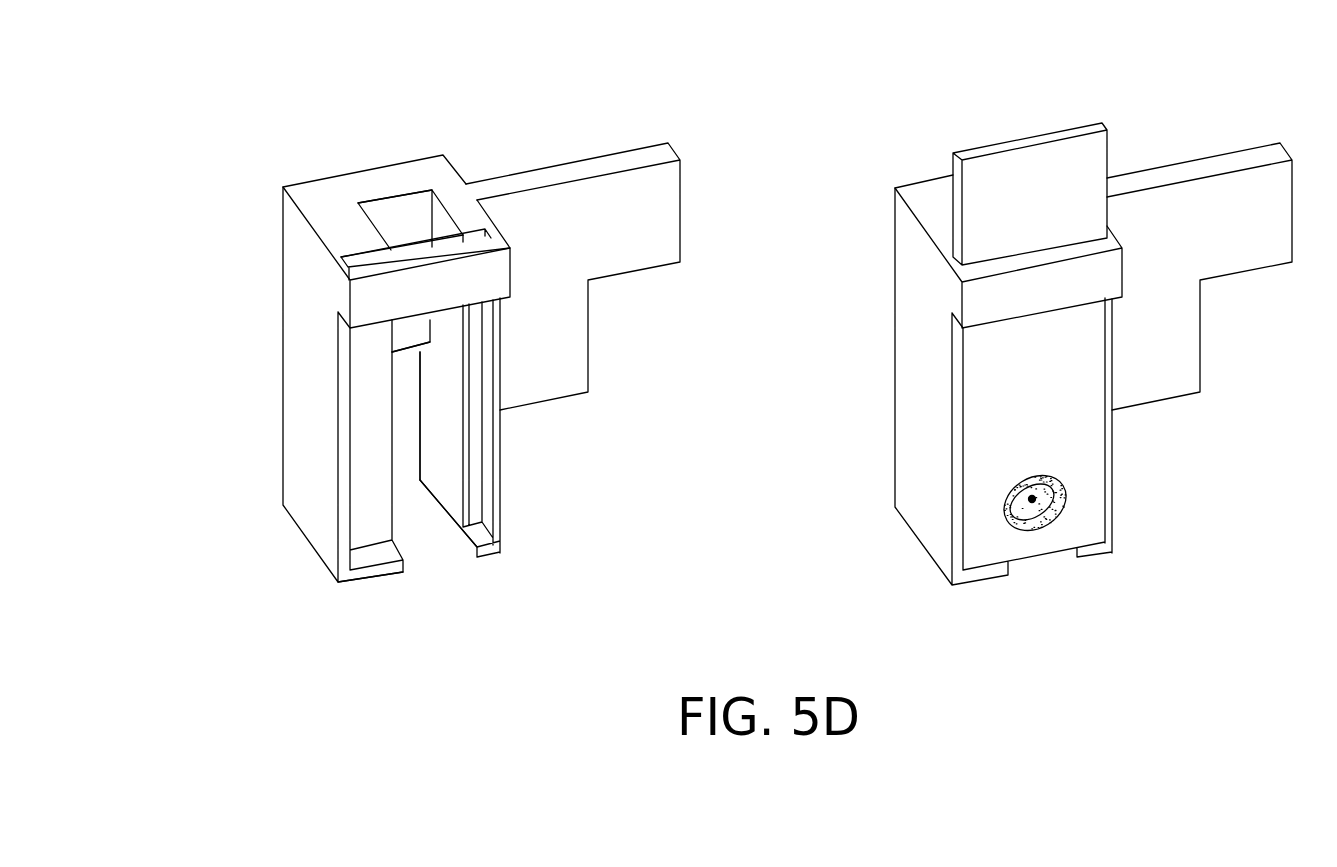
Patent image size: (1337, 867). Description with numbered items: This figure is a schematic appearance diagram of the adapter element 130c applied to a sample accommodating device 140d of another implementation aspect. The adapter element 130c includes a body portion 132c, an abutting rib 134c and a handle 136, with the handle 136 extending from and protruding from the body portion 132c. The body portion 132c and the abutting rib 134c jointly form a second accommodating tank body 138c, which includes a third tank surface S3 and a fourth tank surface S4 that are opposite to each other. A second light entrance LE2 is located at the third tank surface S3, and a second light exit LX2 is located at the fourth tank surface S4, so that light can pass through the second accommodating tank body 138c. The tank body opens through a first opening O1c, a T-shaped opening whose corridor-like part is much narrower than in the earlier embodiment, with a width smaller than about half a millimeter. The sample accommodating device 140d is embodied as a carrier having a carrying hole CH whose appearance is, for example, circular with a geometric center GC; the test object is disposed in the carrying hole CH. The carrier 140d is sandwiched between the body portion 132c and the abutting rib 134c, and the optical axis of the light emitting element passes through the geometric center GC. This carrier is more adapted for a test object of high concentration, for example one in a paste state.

The adapter element 130c is at (762, 568).
The body portion 132c is at (323, 198).
The abutting rib 134c is at (368, 312).
The second accommodating tank body 138c is at (325, 346).
The handle 136 is at (652, 211).
The sample accommodating device 140d is at (948, 166).
The third tank surface S3 is at (393, 195).
The fourth tank surface S4 is at (410, 256).
The first opening O1c is at (405, 233).
The second light entrance LE2 is at (400, 428).
The second light exit LX2 is at (425, 548).
The geometric center GC is at (1053, 490).
The carrying hole CH is at (1033, 512).